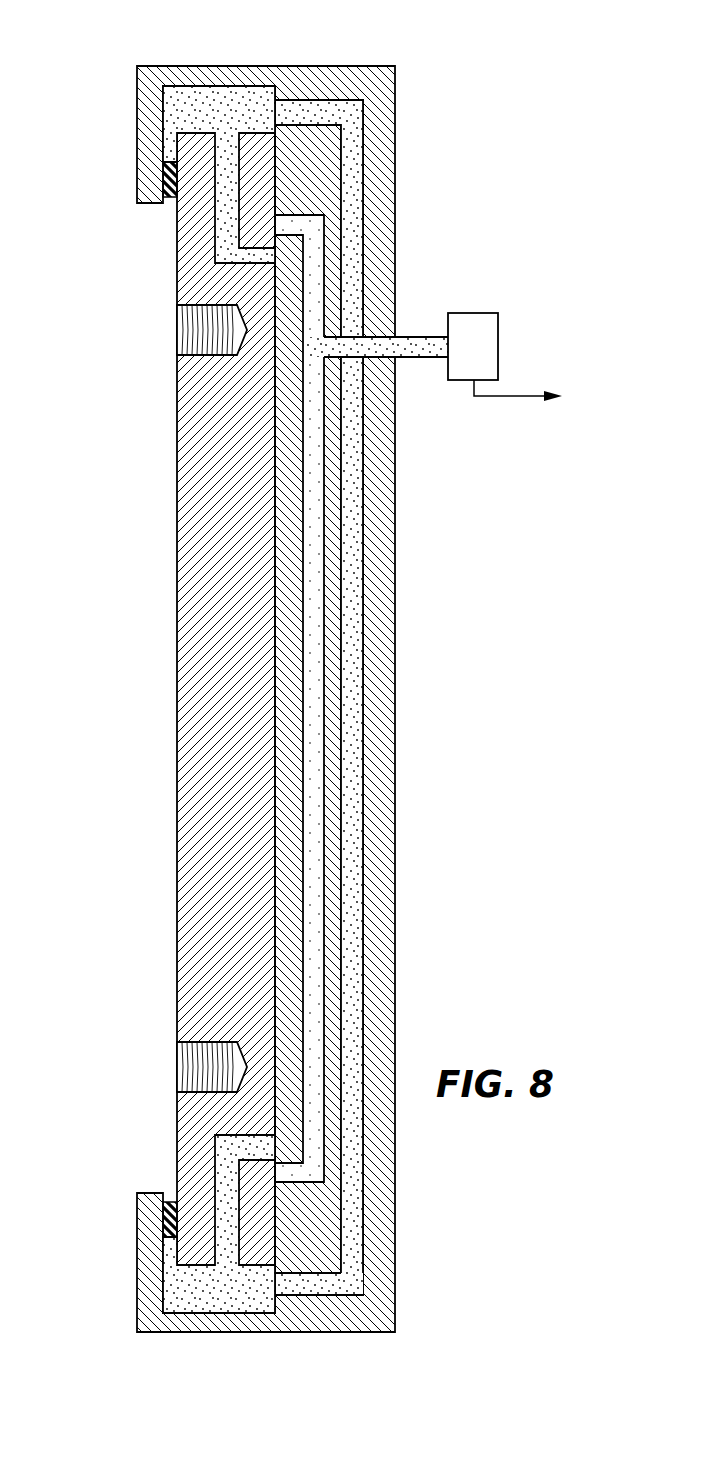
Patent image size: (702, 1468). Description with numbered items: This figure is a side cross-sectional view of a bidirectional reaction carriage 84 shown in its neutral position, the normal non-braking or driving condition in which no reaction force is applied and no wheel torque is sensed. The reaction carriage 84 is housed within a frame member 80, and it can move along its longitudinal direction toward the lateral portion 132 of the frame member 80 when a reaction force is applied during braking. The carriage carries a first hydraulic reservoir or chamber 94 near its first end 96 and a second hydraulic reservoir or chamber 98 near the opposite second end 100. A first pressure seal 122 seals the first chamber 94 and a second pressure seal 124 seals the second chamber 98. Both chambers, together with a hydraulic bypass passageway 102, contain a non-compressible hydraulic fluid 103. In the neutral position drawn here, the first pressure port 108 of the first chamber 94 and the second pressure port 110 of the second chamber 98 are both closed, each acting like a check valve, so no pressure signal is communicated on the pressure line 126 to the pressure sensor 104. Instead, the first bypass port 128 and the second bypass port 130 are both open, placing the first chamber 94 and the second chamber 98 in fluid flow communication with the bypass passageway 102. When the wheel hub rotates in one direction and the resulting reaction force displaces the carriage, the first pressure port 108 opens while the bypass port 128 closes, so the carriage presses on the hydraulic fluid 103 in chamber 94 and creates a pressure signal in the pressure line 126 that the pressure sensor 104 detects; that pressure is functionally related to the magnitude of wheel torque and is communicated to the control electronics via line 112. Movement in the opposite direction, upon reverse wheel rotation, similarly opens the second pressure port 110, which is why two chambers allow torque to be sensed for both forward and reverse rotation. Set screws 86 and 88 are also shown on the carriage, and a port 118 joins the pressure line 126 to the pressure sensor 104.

The frame member 80 is at (380, 168).
The reaction carriage 84 is at (205, 615).
The lower set screw 86 is at (197, 1070).
The upper set screw 88 is at (190, 330).
The first hydraulic chamber 94 is at (208, 1295).
The first end 96 is at (195, 1250).
The second hydraulic chamber 98 is at (180, 102).
The second end 100 is at (198, 149).
The hydraulic bypass passageway 102 is at (380, 580).
The hydraulic fluid 103 is at (210, 110).
The pressure sensor 104 is at (474, 313).
The first pressure port 108 is at (233, 1148).
The second pressure port 110 is at (275, 245).
The line 112 is at (510, 397).
The port 118 is at (419, 357).
The first pressure seal 122 is at (172, 1202).
The second pressure seal 124 is at (168, 202).
The pressure line 126 is at (332, 740).
The first bypass port 128 is at (280, 1285).
The second bypass port 130 is at (277, 113).
The lateral portion 132 is at (253, 1332).